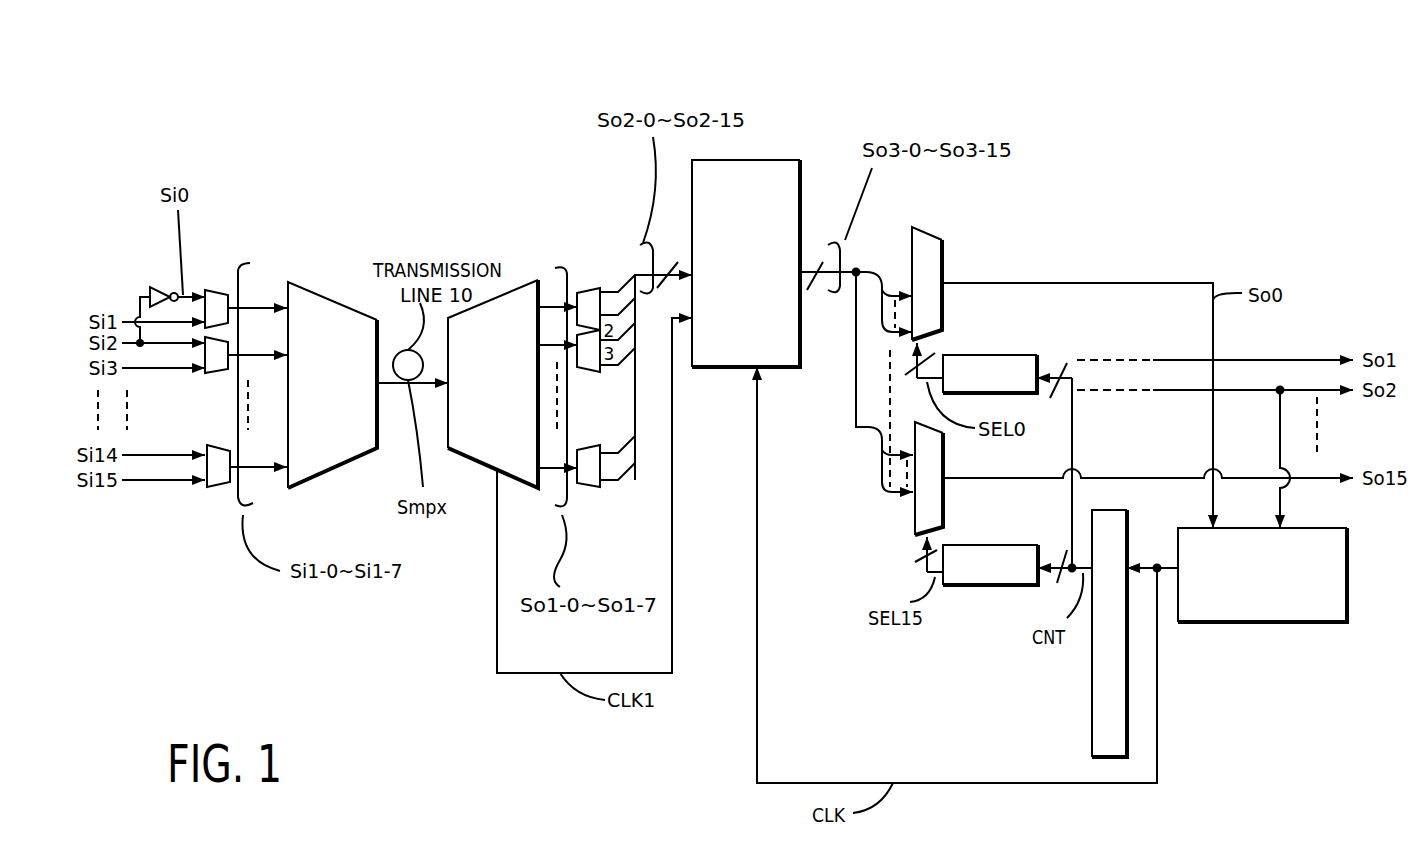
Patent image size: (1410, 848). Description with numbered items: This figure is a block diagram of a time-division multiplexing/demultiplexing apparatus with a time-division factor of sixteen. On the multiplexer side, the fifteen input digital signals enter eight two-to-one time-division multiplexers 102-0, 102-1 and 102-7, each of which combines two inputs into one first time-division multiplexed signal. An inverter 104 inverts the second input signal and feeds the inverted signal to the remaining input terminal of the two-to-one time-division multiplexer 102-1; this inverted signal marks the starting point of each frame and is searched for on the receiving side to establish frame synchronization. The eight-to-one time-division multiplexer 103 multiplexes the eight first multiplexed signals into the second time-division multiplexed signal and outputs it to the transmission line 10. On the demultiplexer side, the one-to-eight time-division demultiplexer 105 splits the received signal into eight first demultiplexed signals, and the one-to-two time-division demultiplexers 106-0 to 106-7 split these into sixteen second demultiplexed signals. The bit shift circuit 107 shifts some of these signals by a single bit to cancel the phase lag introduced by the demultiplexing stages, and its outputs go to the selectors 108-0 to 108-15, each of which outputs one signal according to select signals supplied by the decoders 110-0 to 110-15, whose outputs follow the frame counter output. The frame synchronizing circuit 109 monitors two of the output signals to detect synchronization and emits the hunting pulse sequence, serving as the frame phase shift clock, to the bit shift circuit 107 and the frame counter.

The 2:1 time-division multiplexer 102-0 is at (218, 290).
The 2:1 time-division multiplexer 102-1 is at (222, 373).
The 2:1 time-division multiplexer 102-7 is at (222, 445).
The 8:1 time-division multiplexer 103 is at (330, 325).
The inverter 104 is at (162, 287).
The 1:8 time-division demultiplexer 105 is at (522, 298).
The 1:2 time-division demultiplexer 106-0 is at (560, 268).
The 1:2 time-division demultiplexer 106-7 is at (585, 488).
The bit shift circuit 107 is at (752, 160).
The selector 108-0 is at (923, 227).
The selector 108-15 is at (913, 520).
The frame synchronizing circuit 109 is at (1210, 622).
The decoder 110-0 is at (955, 355).
The decoder 110-15 is at (982, 587).
The transmission line 10 is at (1097, 708).